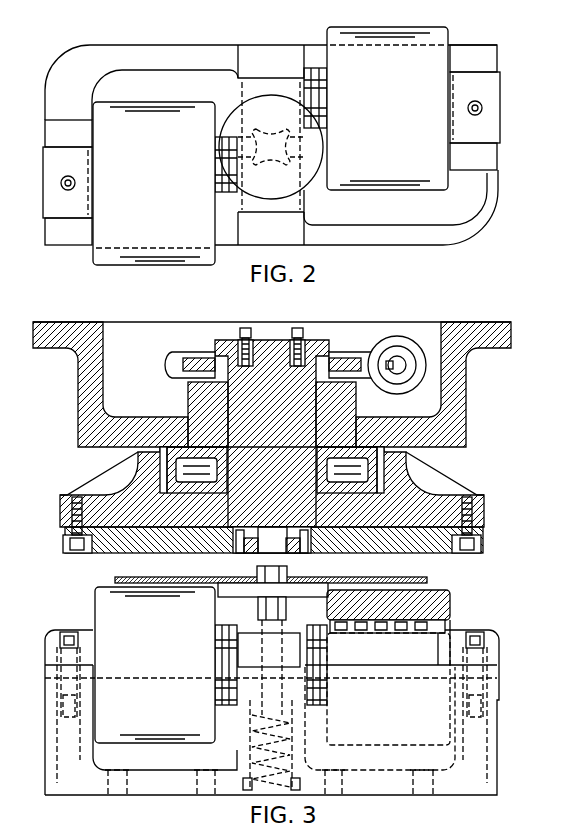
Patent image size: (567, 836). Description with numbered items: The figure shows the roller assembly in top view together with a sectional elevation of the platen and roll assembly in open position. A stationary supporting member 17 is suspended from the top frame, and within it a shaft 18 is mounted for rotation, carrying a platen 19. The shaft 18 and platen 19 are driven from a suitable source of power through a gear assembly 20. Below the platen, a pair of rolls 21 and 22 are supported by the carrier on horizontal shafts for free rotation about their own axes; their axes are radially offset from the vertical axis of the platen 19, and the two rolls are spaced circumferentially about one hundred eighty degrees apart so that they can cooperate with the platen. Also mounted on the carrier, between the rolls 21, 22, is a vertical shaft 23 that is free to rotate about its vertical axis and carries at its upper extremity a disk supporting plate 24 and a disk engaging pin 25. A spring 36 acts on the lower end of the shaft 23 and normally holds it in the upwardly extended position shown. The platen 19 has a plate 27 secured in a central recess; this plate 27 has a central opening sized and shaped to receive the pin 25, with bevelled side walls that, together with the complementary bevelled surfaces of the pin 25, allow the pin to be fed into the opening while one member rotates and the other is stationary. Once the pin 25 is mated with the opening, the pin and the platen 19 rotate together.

In FIG. 3, the stationary supporting member 17 is at (466, 409).
In FIG. 3, the shaft 18 is at (234, 411).
In FIG. 3, the platen 19 is at (423, 551).
In FIG. 3, the gear assembly 20 is at (379, 350).
In FIG. 2, the roll 21 is at (154, 183).
In FIG. 3, the roll 21 is at (155, 665).
In FIG. 2, the roll 22 is at (387, 108).
In FIG. 3, the roll 22 is at (449, 596).
In FIG. 3, the vertical shaft 23 is at (263, 604).
In FIG. 2, the disk supporting plate 24 is at (271, 147).
In FIG. 3, the disk supporting plate 24 is at (291, 604).
In FIG. 2, the disk engaging pin 25 is at (271, 147).
In FIG. 3, the disk engaging pin 25 is at (265, 569).
In FIG. 3, the plate 27 is at (292, 553).
In FIG. 3, the spring 36 is at (240, 763).